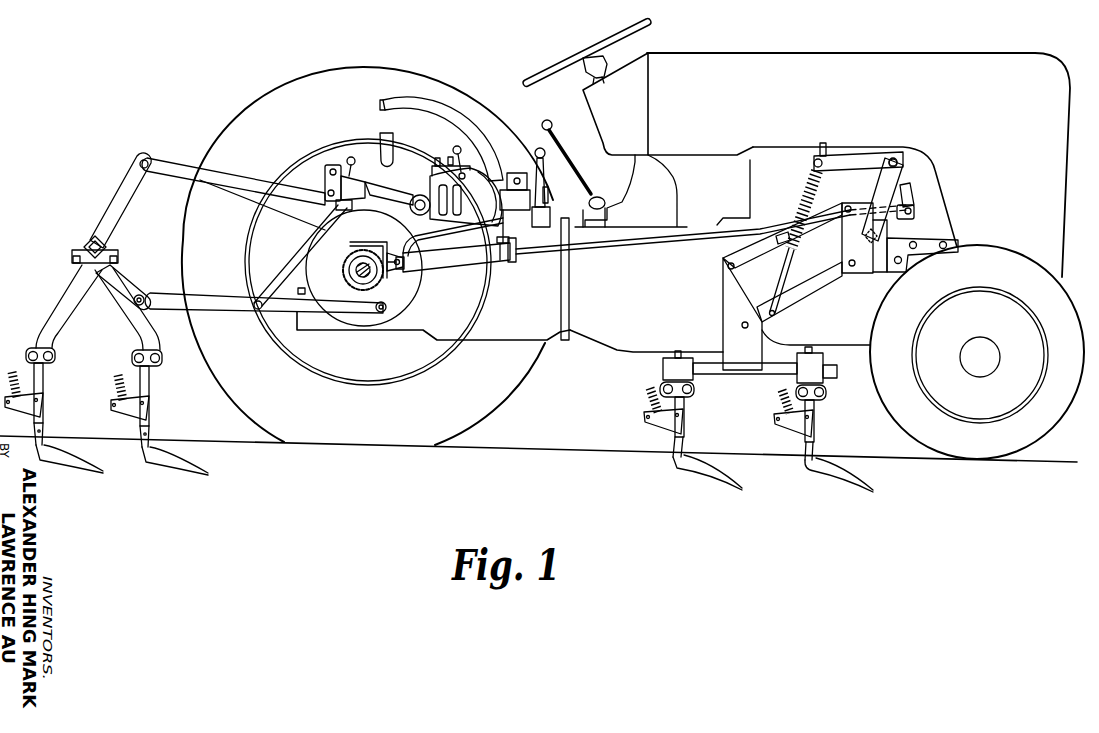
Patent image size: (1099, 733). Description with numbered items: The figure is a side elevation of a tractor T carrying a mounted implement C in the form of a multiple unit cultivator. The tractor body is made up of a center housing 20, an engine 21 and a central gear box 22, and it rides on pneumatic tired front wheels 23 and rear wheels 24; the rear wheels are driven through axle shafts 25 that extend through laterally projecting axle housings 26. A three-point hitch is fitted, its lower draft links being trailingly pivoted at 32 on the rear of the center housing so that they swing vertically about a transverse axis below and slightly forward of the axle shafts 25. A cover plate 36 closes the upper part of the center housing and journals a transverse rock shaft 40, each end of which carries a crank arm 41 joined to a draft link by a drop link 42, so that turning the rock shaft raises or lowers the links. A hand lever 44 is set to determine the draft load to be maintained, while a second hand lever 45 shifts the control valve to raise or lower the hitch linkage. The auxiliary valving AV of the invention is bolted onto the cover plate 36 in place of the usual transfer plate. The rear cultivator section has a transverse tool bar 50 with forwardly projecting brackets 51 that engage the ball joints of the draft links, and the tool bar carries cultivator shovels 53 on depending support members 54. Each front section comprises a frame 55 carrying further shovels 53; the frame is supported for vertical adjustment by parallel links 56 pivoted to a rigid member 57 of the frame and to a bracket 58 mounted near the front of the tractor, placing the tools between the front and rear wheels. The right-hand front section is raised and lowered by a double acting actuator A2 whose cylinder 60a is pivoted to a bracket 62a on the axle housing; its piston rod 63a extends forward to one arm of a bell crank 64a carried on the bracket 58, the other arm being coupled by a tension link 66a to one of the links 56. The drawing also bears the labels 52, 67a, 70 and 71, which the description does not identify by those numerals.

The tractor T is at (724, 54).
The center housing 20 is at (507, 328).
The engine 21 is at (853, 327).
The central gear box 22 is at (633, 328).
The front wheels 23 is at (910, 420).
The rear wheels 24 is at (453, 407).
The axle shafts 25 is at (355, 274).
The axle housings 26 is at (347, 263).
The pivot 32 is at (383, 312).
The cover plate 36 is at (543, 213).
The rock shaft 40 is at (419, 193).
The crank arm 41 is at (360, 170).
The drop links 42 is at (305, 233).
The hand lever 44 is at (446, 167).
The second hand lever 45 is at (458, 143).
The tool bar 50 is at (110, 249).
The brackets 51 is at (127, 281).
The upper arm 52 is at (128, 186).
The cultivator shovels 53 is at (162, 465).
The support members 54 is at (128, 320).
The frame 55 is at (742, 375).
The parallel links 56 is at (807, 287).
The rigid member 57 is at (733, 300).
The bracket 58 is at (887, 280).
The cylinder 60a is at (452, 262).
The brackets 62a is at (380, 242).
The piston rod 63a is at (618, 240).
The bell crank 64a is at (903, 153).
The tension link 66a is at (787, 270).
The lever 67a is at (887, 190).
The lower link 70 is at (224, 302).
The upper link 71 is at (178, 163).
The actuator A2 is at (480, 262).
The auxiliary valving AV is at (540, 184).
The implement C is at (80, 247).